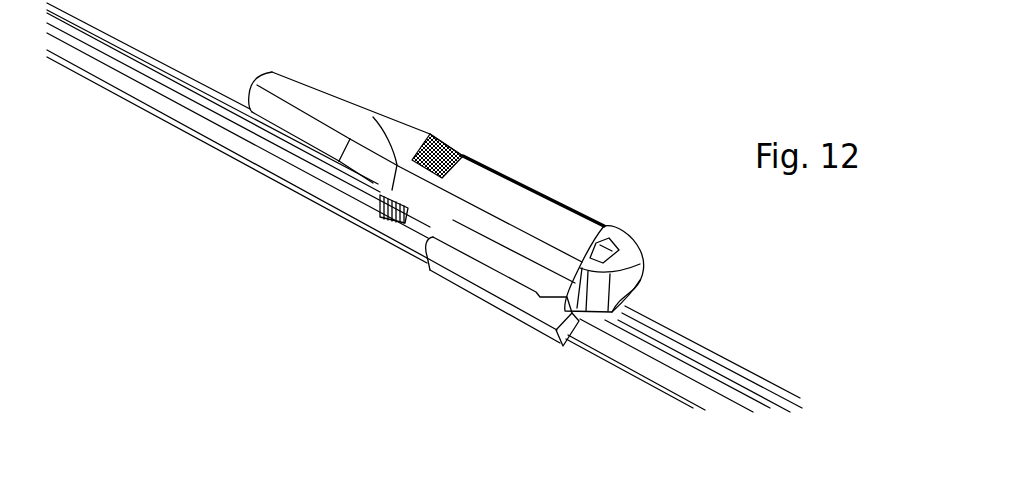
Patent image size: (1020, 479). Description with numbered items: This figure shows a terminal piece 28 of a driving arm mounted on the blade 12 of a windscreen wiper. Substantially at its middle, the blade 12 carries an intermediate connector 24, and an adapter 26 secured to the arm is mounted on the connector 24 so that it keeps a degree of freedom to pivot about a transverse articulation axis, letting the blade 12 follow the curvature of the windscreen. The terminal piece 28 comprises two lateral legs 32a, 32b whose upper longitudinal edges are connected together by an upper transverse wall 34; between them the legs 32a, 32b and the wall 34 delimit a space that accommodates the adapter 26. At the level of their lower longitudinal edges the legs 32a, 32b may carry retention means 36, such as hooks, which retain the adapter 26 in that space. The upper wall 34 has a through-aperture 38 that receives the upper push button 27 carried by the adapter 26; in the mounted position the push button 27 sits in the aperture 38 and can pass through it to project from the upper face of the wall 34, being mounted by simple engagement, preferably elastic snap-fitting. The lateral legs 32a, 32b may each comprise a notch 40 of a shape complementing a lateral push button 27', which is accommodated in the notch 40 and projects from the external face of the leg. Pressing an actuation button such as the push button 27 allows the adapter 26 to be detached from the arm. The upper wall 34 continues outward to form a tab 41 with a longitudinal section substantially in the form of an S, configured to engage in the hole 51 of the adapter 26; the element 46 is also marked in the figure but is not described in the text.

The blade 12 is at (728, 339).
The intermediate connector 24 is at (545, 360).
The adapter 26 is at (652, 234).
The push button 27 is at (473, 115).
The lateral push button 27' is at (338, 223).
The terminal piece 28 is at (348, 88).
The lateral leg 32a is at (418, 232).
The lateral leg 32b is at (581, 213).
The upper transverse wall 34 is at (498, 187).
The retention means 36 is at (510, 278).
The through-aperture 38 is at (421, 160).
The notch 40 is at (393, 240).
The tab 41 is at (606, 236).
The lower edge 46 is at (643, 285).
The hole 51 is at (647, 262).